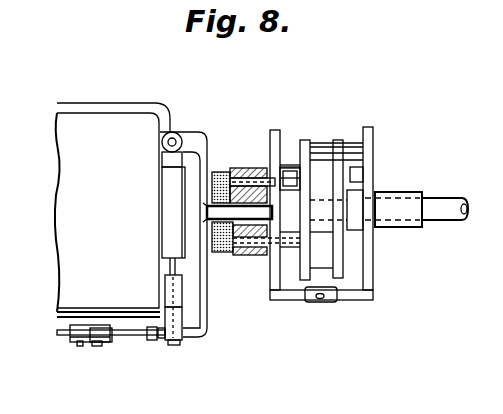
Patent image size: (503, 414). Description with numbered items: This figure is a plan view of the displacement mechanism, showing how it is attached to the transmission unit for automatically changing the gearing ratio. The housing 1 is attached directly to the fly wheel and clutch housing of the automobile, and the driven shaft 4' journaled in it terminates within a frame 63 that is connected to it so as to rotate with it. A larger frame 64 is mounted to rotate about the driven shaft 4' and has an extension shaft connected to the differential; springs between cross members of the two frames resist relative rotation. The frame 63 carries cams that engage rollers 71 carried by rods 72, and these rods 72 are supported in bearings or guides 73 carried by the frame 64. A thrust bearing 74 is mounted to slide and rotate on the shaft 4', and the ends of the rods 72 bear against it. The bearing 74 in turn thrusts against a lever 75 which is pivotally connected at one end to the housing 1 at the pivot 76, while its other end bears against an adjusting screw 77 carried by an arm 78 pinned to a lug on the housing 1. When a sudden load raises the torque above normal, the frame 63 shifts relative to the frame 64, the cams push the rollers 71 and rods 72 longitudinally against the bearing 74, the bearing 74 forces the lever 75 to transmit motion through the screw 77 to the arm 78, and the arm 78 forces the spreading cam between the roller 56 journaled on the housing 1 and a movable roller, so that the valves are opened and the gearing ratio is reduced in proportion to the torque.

The housing 1 is at (107, 215).
The driven shaft 4' is at (201, 221).
The roller 56 is at (103, 339).
The frame 63 is at (307, 278).
The frame 64 is at (278, 290).
The rollers 71 is at (286, 166).
The rods 72 is at (251, 180).
The bearings or guides 73 is at (243, 168).
The thrust bearing 74 is at (222, 252).
The lever 75 is at (207, 312).
The pivot 76 is at (172, 132).
The adjusting screw 77 is at (156, 342).
The arm 78 is at (182, 318).